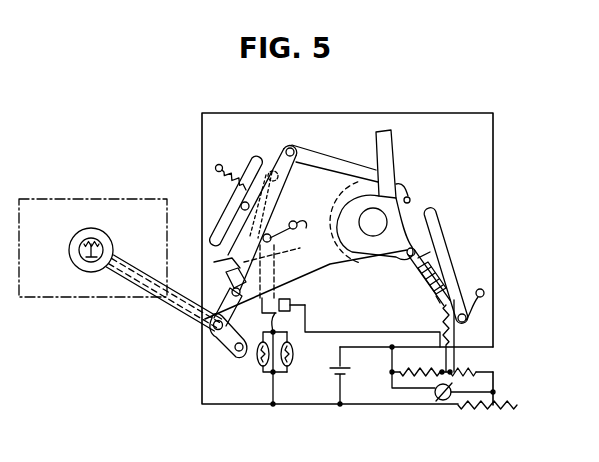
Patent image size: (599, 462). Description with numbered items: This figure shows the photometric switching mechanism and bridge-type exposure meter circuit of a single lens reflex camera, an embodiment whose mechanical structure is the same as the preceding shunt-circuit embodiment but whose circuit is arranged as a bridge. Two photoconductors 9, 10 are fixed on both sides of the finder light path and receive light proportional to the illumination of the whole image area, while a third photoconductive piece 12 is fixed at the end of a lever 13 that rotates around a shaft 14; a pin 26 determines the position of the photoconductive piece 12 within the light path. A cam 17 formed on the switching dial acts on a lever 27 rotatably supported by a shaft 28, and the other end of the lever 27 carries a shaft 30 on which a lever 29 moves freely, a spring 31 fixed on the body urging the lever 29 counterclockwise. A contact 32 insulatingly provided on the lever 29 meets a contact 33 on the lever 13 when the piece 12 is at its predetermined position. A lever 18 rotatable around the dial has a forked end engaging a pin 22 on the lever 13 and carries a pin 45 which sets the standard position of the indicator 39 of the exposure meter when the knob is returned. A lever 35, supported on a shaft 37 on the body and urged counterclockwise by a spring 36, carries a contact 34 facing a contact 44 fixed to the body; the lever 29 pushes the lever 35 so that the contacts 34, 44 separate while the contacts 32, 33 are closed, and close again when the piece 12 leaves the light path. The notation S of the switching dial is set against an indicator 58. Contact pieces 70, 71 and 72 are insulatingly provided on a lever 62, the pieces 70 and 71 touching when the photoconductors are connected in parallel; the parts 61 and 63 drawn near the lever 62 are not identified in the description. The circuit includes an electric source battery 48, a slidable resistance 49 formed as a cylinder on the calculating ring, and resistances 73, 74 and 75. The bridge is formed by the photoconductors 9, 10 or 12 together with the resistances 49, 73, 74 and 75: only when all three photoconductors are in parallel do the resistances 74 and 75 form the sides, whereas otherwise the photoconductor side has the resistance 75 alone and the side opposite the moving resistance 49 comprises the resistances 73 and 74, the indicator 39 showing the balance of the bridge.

The photoconductor 9 is at (291, 362).
The photoconductor 10 is at (259, 362).
The third photoconductive piece 12 is at (93, 262).
The lever 13 is at (163, 300).
The shaft 14 is at (212, 330).
The cam 17 is at (370, 262).
The lever 18 is at (345, 266).
The pin 22 is at (230, 291).
The pin 26 is at (242, 342).
The lever 27 is at (349, 158).
The shaft 28 is at (289, 148).
The lever 29 is at (230, 236).
The shaft 30 is at (241, 203).
The spring 31 is at (231, 172).
The contact 32 is at (216, 264).
The contact 33 is at (228, 278).
The contact 34 is at (306, 320).
The lever 35 is at (298, 252).
The spring 36 is at (300, 224).
The shaft 37 is at (279, 256).
The indicator of the exposure meter 39 is at (443, 400).
The contact 44 is at (291, 300).
The pin 45 is at (430, 254).
The electric source battery 48 is at (344, 372).
The slidable resistance 49 is at (500, 410).
The indicator 58 is at (408, 196).
The pivot pin 61 is at (463, 323).
The lever 62 is at (440, 223).
The pivot 63 is at (484, 296).
The contact piece 70 is at (410, 257).
The contact piece 71 is at (428, 292).
The contact piece 72 is at (436, 302).
The resistance 73 is at (422, 366).
The resistance 74 is at (436, 377).
The resistance 75 is at (468, 368).